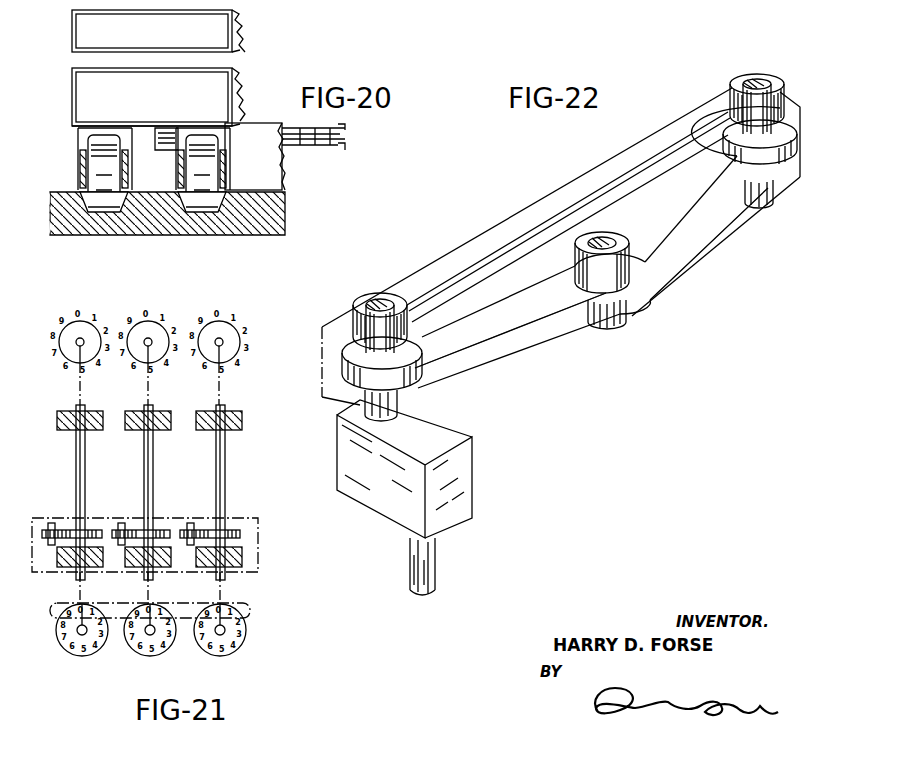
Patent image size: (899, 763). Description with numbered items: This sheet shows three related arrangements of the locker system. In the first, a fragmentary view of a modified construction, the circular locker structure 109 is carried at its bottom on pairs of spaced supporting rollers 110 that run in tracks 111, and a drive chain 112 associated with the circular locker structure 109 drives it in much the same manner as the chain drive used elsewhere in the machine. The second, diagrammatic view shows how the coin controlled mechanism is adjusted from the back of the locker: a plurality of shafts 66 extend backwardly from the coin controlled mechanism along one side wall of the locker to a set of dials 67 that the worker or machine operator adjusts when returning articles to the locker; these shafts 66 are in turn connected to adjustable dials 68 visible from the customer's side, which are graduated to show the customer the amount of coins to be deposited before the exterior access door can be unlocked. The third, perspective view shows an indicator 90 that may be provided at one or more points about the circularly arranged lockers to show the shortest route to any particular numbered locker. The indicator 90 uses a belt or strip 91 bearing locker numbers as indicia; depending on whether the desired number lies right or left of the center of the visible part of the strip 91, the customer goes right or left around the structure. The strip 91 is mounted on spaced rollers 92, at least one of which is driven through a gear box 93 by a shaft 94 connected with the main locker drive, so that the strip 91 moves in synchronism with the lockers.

In FIG. 20, the circular locker structure 109 is at (231, 40).
In FIG. 20, the supporting rollers 110 is at (103, 212).
In FIG. 20, the tracks 111 is at (222, 210).
In FIG. 20, the drive chain 112 is at (340, 142).
In FIG. 21, the shafts 66 is at (142, 452).
In FIG. 21, the dials 67 is at (132, 328).
In FIG. 21, the adjustable dials 68 is at (130, 643).
In FIG. 22, the indicator 90 is at (698, 273).
In FIG. 22, the belt or strip 91 is at (563, 318).
In FIG. 22, the rollers 92 is at (340, 360).
In FIG. 22, the gear box 93 is at (392, 513).
In FIG. 22, the shaft 94 is at (413, 586).